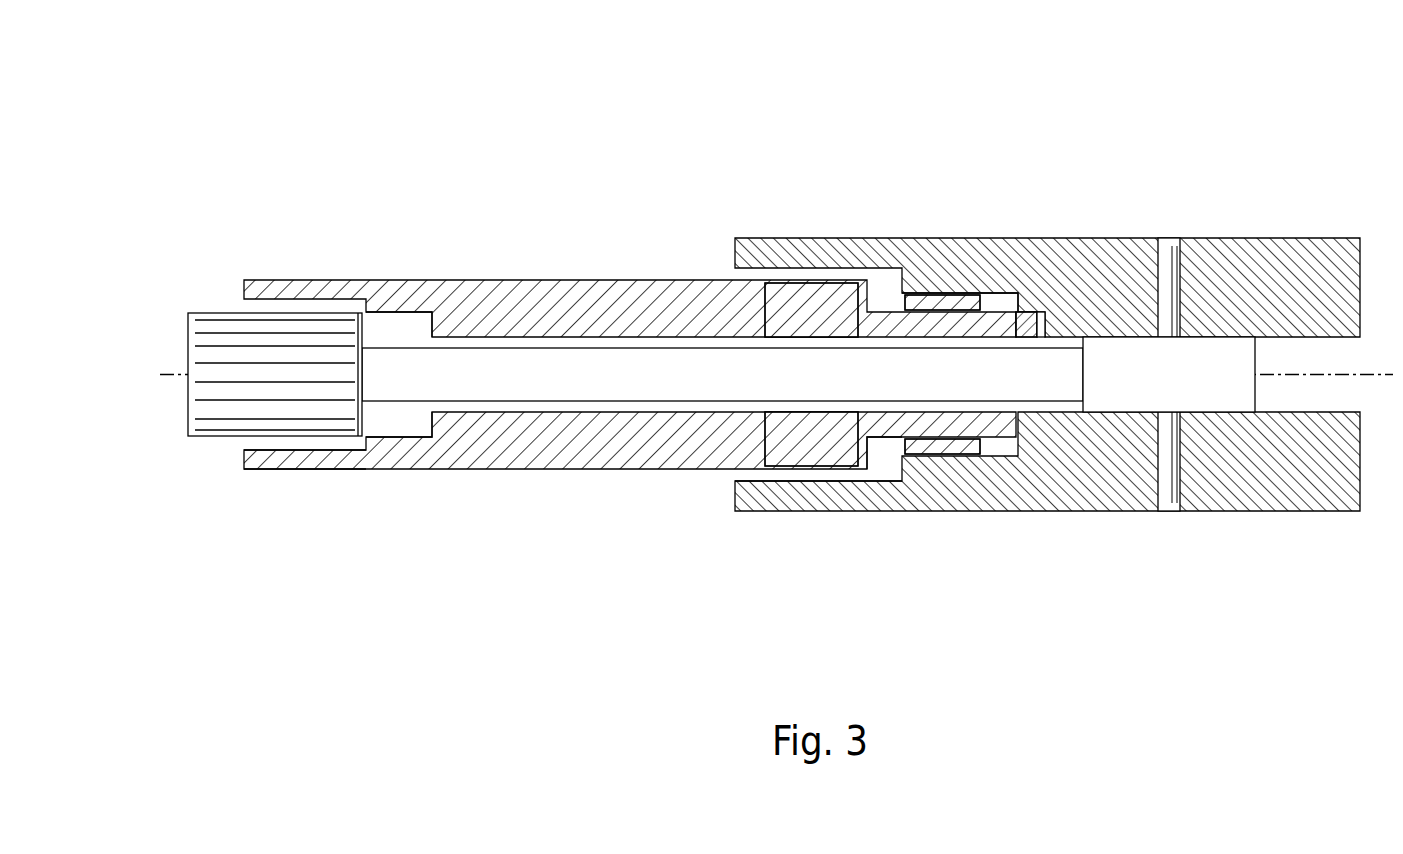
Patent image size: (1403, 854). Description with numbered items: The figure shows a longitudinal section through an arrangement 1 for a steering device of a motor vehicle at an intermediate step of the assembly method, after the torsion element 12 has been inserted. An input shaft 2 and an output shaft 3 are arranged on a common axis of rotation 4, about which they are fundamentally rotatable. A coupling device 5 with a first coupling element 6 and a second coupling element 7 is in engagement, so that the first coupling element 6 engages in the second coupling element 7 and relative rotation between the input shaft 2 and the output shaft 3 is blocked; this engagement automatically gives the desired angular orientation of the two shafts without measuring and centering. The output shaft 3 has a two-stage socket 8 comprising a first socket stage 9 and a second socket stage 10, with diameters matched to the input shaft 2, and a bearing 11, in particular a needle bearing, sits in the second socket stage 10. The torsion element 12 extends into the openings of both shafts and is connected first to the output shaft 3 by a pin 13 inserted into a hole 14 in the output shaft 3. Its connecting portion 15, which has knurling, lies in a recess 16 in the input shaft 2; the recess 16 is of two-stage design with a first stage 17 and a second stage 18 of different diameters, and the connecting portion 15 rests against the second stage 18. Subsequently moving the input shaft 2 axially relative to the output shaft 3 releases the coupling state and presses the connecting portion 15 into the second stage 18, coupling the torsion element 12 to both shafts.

The arrangement 1 is at (752, 126).
The input shaft 2 is at (472, 292).
The output shaft 3 is at (1270, 262).
The common axis of rotation 4 is at (1389, 380).
The coupling device 5 is at (1031, 280).
The first coupling element 6 is at (1026, 326).
The second coupling element 7 is at (1043, 322).
The two-stage socket 8 is at (889, 464).
The first socket stage 9 is at (823, 483).
The second socket stage 10 is at (997, 457).
The bearing 11 is at (935, 302).
The torsion element 12 is at (603, 362).
The pin 13 is at (1161, 466).
The hole 14 is at (1187, 485).
The connecting portion 15 is at (213, 313).
The recess 16 is at (327, 443).
The first stage 17 is at (293, 452).
The second stage 18 is at (413, 440).